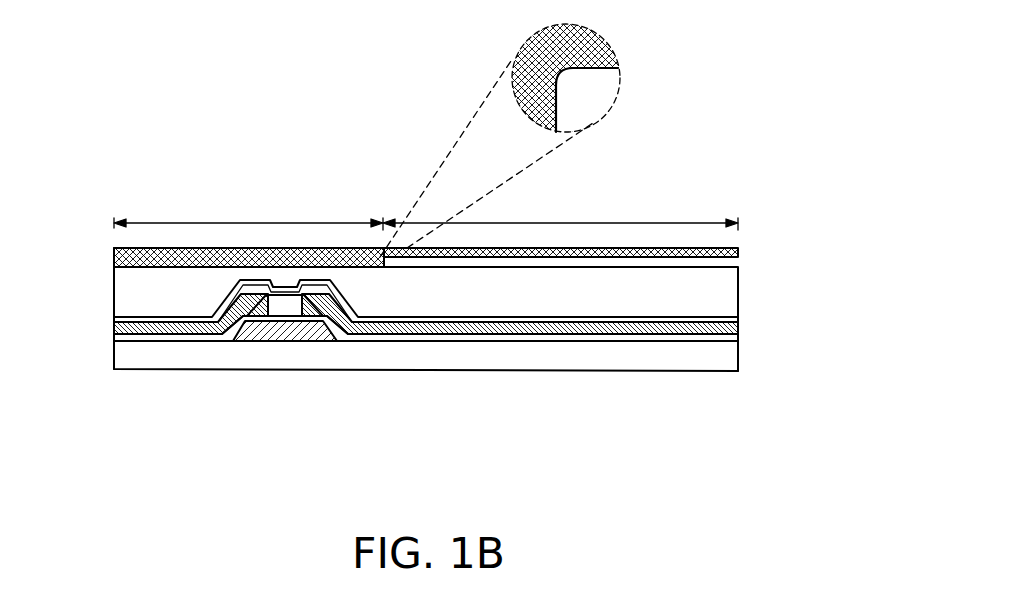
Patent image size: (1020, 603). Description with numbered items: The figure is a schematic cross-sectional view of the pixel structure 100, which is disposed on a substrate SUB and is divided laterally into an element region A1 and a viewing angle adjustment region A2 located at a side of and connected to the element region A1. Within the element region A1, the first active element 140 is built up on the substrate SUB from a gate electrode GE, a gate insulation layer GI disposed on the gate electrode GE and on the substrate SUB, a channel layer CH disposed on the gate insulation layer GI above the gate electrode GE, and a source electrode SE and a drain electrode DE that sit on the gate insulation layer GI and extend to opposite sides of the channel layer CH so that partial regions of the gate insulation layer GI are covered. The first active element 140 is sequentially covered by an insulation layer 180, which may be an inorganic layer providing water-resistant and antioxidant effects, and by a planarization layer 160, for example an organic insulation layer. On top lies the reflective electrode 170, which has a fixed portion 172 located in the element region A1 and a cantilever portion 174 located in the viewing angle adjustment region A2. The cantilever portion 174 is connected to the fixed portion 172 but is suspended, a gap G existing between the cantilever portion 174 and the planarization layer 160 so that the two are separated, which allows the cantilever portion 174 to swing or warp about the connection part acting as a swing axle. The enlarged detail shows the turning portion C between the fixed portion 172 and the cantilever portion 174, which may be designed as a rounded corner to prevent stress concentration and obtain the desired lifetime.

The pixel structure 100 is at (108, 248).
The first active element 140 is at (392, 433).
The planarization layer 160 is at (718, 290).
The reflective electrode 170 is at (418, 158).
The fixed portion 172 is at (380, 255).
The cantilever portion 174 is at (427, 248).
The insulation layer 180 is at (722, 325).
The substrate SUB is at (720, 357).
The gate electrode GE is at (265, 330).
The gate insulation layer GI is at (397, 338).
The channel layer CH is at (287, 305).
The source electrode SE is at (195, 335).
The drain electrode DE is at (350, 333).
The gap G is at (716, 263).
The turning portion C is at (569, 83).
The element region A1 is at (248, 210).
The viewing angle adjustment region A2 is at (560, 211).